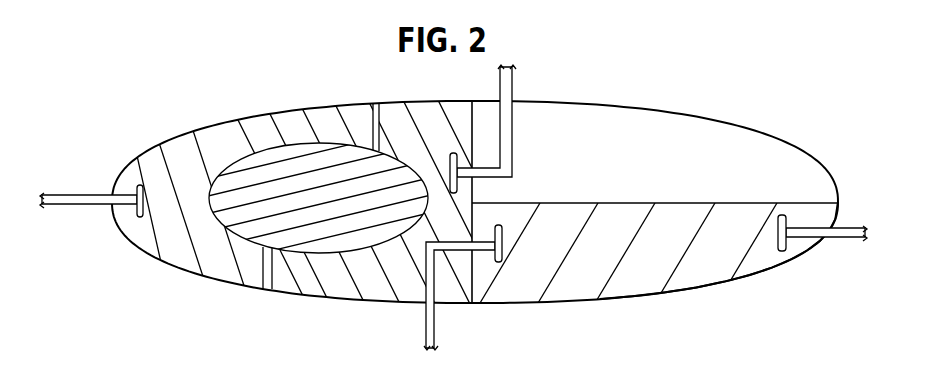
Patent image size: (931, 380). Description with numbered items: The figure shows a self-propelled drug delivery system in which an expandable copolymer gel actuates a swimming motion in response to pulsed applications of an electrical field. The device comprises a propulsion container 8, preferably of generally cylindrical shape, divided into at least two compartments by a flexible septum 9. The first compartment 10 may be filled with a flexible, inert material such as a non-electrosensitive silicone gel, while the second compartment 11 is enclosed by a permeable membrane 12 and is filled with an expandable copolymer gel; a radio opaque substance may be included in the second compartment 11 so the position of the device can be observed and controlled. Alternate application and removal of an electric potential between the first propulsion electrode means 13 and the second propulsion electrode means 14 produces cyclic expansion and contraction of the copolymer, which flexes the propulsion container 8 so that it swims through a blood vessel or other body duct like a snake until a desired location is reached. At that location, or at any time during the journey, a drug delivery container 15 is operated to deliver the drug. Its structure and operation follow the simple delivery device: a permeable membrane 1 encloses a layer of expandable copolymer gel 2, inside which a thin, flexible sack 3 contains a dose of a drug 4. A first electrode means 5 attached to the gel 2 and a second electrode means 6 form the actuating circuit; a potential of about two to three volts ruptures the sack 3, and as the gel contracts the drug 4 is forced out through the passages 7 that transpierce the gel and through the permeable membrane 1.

The permeable membrane 1 is at (210, 127).
The expandable copolymer gel 2 is at (228, 270).
The flexible sack 3 is at (362, 302).
The drug 4 is at (231, 198).
The first electrode means 5 is at (511, 88).
The second electrode means 6 is at (83, 195).
The passages 7 is at (371, 128).
The propulsion container 8 is at (703, 118).
The flexible septum 9 is at (735, 203).
The first compartment 10 is at (620, 118).
The second compartment 11 is at (702, 258).
The permeable membrane 12 is at (773, 268).
The first propulsion electrode means 13 is at (433, 317).
The second propulsion electrode means 14 is at (848, 225).
The drug delivery container 15 is at (155, 148).